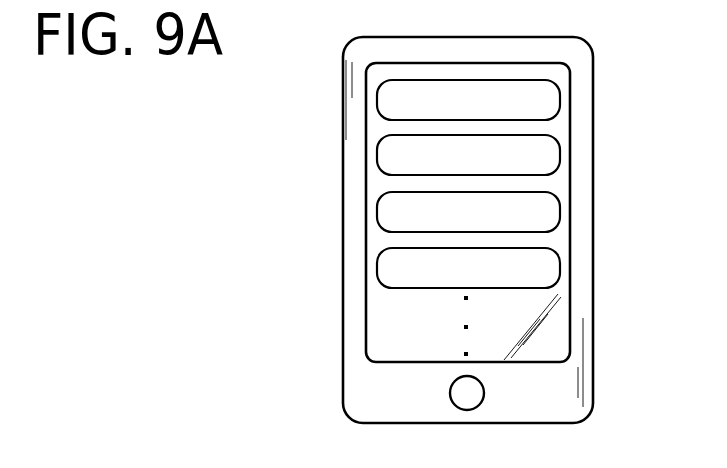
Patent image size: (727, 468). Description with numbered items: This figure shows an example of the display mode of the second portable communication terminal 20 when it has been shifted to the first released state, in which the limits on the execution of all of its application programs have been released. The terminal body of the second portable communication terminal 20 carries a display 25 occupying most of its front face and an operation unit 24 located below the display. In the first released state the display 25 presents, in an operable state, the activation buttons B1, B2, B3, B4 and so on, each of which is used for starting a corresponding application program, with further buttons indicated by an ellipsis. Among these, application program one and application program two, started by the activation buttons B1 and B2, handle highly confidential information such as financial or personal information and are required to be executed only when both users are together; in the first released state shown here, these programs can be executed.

The second portable communication terminal 20 is at (467, 37).
The display 25 is at (570, 128).
The operation unit 24 is at (484, 393).
The activation button B1 is at (377, 99).
The activation button B2 is at (377, 156).
The activation button B3 is at (377, 213).
The activation button B4 is at (377, 269).